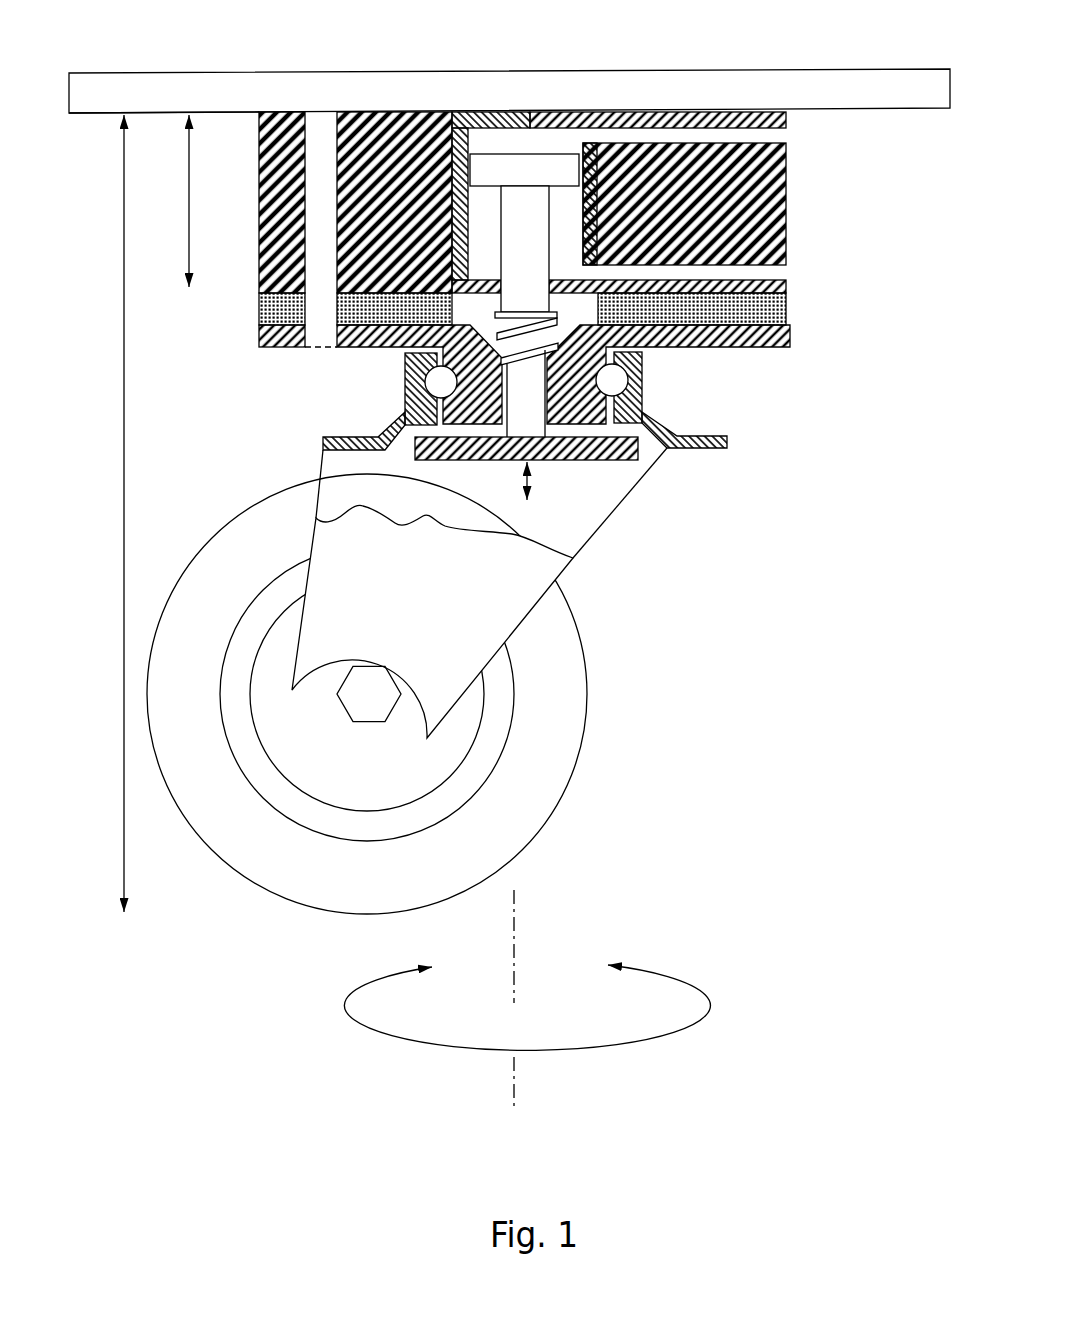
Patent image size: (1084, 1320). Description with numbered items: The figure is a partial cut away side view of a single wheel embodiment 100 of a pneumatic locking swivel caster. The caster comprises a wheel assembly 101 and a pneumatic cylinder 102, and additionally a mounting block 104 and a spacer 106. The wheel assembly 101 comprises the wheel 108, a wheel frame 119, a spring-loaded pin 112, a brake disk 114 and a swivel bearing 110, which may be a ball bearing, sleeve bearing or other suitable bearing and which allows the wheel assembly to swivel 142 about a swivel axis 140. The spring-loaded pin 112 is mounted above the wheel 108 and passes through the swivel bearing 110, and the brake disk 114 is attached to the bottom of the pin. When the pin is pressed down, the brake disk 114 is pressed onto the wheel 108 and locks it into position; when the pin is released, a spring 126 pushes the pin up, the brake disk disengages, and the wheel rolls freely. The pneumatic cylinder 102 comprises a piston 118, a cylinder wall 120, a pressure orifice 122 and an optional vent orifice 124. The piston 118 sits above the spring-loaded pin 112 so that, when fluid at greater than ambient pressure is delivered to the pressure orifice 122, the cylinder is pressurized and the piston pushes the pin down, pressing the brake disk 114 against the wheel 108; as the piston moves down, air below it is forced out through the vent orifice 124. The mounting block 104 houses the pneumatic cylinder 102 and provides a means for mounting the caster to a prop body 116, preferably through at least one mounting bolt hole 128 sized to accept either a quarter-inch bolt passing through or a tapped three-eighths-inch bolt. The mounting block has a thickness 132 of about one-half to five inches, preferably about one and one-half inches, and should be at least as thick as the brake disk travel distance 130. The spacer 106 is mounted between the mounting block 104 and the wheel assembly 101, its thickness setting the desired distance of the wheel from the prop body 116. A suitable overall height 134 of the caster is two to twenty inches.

The single wheel embodiment 100 is at (500, 11).
The wheel assembly 101 is at (647, 738).
The pneumatic cylinder 102 is at (531, 96).
The mounting block 104 is at (790, 195).
The spacer 106 is at (790, 311).
The wheel 108 is at (591, 692).
The swivel bearing 110 is at (628, 379).
The spring-loaded pin 112 is at (547, 413).
The brake disk 114 is at (643, 452).
The prop body 116 is at (164, 97).
The piston 118 is at (541, 165).
The wheel frame 119 is at (628, 515).
The cylinder wall 120 is at (597, 228).
The pressure orifice 122 is at (790, 137).
The vent orifice 124 is at (790, 272).
The spring 126 is at (560, 352).
The mounting bolt hole 128 is at (323, 123).
The brake disk travel distance 130 is at (513, 473).
The thickness 132 is at (165, 201).
The height 134 is at (92, 513).
The swivel axis 140 is at (518, 953).
The swivel 142 is at (530, 1019).